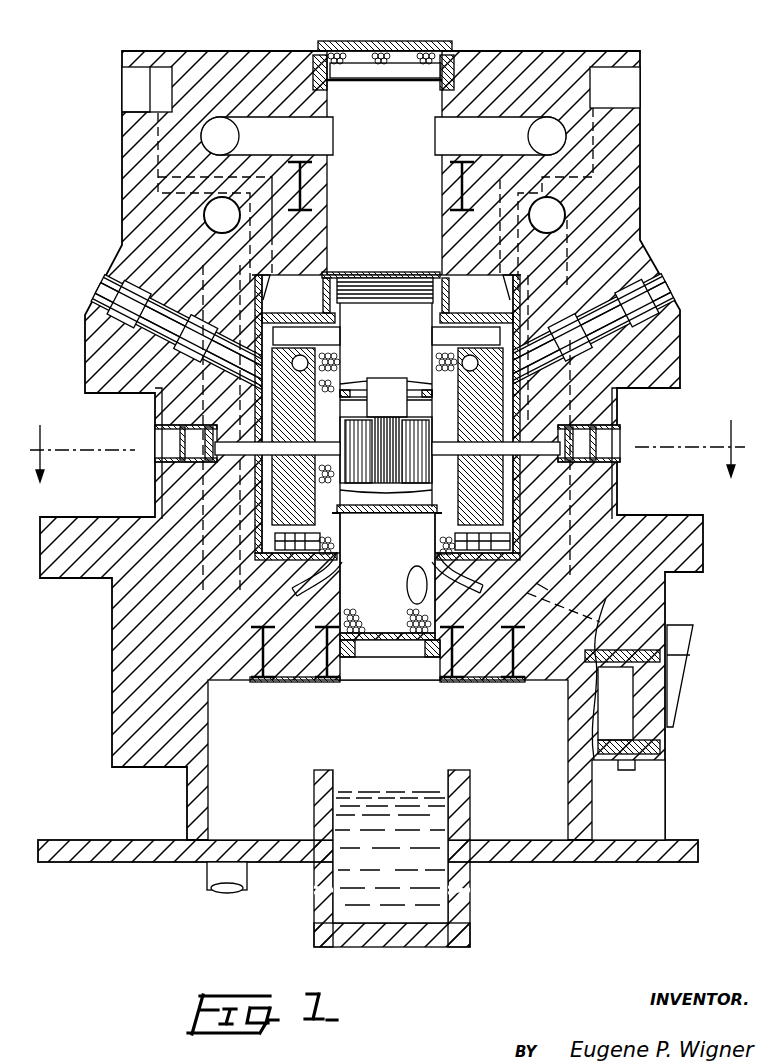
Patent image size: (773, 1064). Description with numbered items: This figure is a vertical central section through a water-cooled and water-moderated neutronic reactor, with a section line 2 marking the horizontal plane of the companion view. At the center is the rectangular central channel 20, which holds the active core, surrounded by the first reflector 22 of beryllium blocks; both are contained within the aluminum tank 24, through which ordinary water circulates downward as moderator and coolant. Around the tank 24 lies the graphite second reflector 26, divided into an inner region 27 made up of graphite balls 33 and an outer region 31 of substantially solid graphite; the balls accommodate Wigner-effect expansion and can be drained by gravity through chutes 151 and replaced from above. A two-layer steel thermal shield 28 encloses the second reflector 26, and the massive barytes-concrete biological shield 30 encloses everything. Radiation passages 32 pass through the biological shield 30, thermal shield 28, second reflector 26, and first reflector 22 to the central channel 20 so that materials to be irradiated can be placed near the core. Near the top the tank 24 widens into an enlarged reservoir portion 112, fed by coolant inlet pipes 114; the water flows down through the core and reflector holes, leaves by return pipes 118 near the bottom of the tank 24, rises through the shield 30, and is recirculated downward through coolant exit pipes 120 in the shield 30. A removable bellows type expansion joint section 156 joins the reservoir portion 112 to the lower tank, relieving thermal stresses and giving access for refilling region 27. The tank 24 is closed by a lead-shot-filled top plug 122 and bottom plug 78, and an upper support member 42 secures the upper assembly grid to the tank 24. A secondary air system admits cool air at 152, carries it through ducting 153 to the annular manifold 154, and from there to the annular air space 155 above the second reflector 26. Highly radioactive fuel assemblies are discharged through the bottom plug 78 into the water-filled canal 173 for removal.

The section line 2- 2 is at (386, 451).
The central channel 20 is at (383, 483).
The first reflector 22 is at (345, 434).
The tank 24 is at (330, 205).
The second reflector 26 is at (455, 345).
The graphite ball region 27 is at (347, 540).
The thermal shield 28 is at (286, 313).
The biological radiation shield 30 is at (625, 243).
The solid graphite region 31 is at (470, 498).
The radiation passages 32 is at (108, 294).
The graphite balls 33 is at (306, 336).
The upper support member 42 is at (387, 397).
The bottom plug 78 is at (400, 632).
The enlarged reservoir portion 112 is at (384, 163).
The coolant inlet pipes 114 is at (258, 126).
The return pipes 118 is at (208, 215).
The coolant exit pipes 120 is at (208, 368).
The top plug 122 is at (385, 55).
The chutes 151 is at (529, 580).
The air inlet 152 is at (137, 87).
The ducting 153 is at (160, 147).
The annular manifold 154 is at (282, 284).
The annular air space 155 is at (466, 335).
The bellows type expansion joint section 156 is at (380, 276).
The canal 173 is at (470, 912).